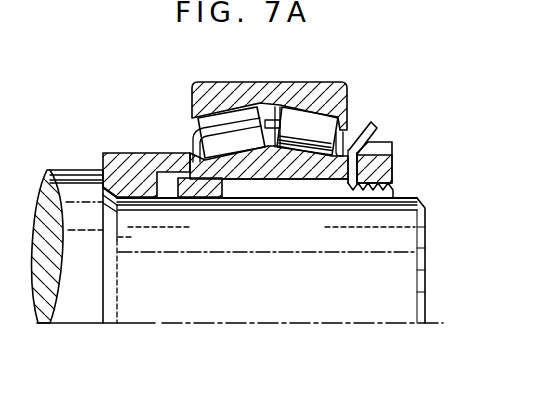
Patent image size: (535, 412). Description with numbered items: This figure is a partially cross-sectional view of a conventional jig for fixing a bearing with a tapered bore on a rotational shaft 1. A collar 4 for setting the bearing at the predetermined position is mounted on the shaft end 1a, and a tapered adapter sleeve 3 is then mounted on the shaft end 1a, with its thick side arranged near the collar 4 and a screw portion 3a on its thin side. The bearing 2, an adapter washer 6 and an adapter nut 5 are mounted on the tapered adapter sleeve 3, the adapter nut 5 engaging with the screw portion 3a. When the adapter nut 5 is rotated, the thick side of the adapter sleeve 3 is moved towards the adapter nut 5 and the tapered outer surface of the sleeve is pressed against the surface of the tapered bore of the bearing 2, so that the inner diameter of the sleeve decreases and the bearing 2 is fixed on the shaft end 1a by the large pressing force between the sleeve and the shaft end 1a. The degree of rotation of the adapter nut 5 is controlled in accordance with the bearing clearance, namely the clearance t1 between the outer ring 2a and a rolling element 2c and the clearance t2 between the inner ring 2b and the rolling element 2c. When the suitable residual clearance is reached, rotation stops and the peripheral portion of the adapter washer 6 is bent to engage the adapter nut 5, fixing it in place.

The shaft 1 is at (78, 168).
The shaft end 1a is at (303, 302).
The bearing 2 is at (294, 139).
The outer ring 2a is at (253, 93).
The inner ring 2b is at (263, 172).
The rolling element 2c is at (316, 118).
The tapered adapter sleeve 3 is at (325, 217).
The screw portion 3a is at (393, 191).
The collar 4 is at (140, 167).
The adapter nut 5 is at (383, 163).
The adapter washer 6 is at (377, 131).
The clearance between outer ring and rolling element t1 is at (219, 112).
The clearance between inner ring and rolling element t2 is at (213, 174).